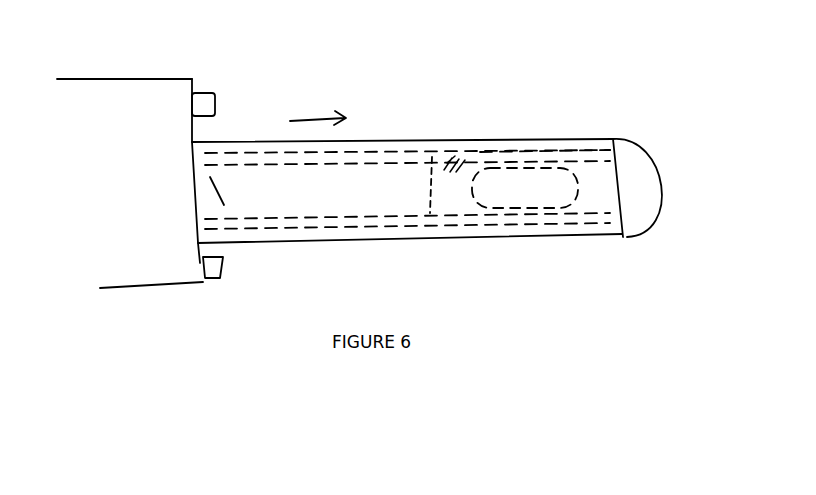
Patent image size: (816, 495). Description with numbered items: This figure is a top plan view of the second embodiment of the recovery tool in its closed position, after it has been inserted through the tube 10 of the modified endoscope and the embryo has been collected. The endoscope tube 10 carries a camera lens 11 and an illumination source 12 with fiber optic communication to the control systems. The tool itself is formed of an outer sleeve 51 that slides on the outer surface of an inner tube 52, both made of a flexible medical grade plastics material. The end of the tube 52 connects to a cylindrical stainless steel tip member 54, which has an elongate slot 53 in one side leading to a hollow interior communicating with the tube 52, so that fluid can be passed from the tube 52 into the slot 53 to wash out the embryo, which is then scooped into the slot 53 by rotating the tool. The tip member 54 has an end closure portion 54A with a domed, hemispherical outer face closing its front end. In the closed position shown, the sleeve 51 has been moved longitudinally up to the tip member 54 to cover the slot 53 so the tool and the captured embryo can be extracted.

The tube 10 is at (133, 88).
The camera lens 11 is at (203, 100).
The illumination source 12 is at (209, 266).
The outer sleeve 51 is at (447, 150).
The tube 52 is at (528, 158).
The elongate slot 53 is at (530, 197).
The tip member 54 is at (642, 182).
The end closure portion 54A is at (612, 180).